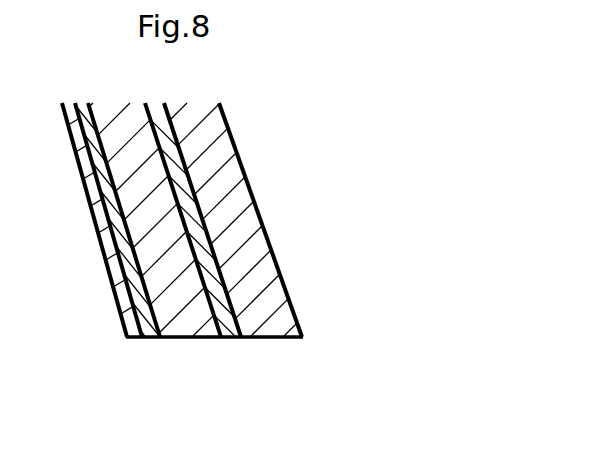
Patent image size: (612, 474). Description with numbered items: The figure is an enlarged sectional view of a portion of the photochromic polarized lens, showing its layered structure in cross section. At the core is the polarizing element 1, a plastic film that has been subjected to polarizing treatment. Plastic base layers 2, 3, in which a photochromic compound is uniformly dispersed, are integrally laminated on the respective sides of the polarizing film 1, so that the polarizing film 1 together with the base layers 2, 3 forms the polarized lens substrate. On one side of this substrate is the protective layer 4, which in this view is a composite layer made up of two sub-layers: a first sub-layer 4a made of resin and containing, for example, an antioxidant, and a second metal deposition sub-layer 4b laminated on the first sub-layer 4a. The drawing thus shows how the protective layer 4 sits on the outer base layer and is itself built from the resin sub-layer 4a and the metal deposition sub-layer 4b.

The polarizing element 1 is at (227, 313).
The plastic base layer 2 is at (188, 310).
The plastic base layer 3 is at (267, 303).
The protective layer 4 is at (127, 273).
The first sub-layer 4a is at (148, 322).
The second metal deposition sub-layer 4b is at (130, 318).